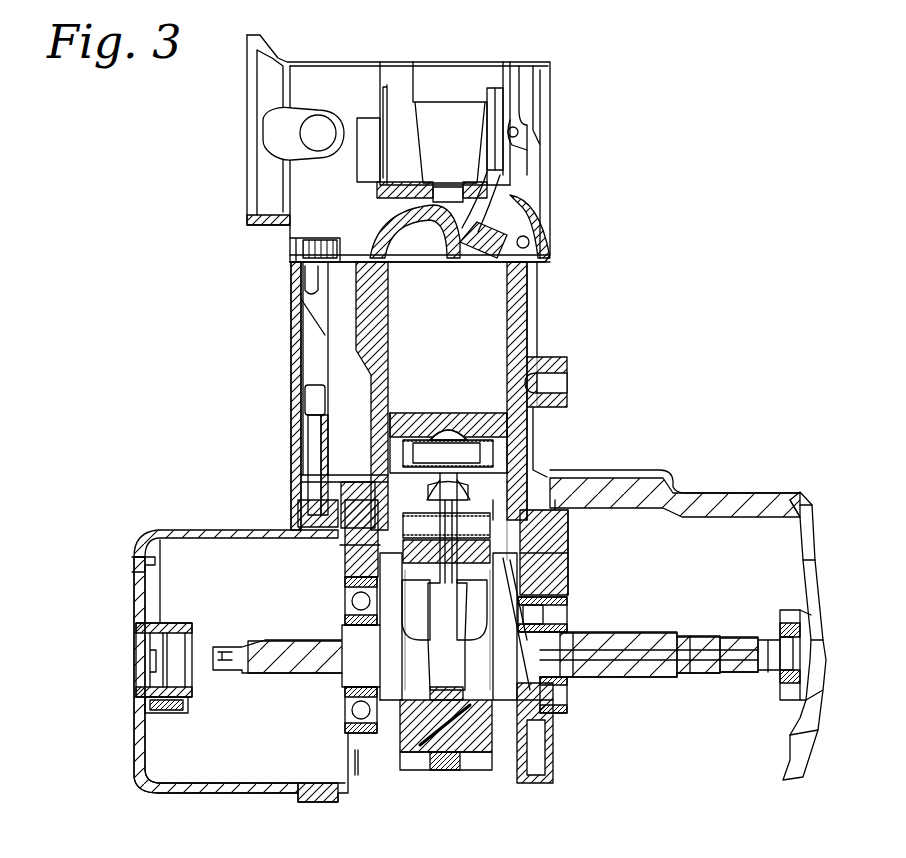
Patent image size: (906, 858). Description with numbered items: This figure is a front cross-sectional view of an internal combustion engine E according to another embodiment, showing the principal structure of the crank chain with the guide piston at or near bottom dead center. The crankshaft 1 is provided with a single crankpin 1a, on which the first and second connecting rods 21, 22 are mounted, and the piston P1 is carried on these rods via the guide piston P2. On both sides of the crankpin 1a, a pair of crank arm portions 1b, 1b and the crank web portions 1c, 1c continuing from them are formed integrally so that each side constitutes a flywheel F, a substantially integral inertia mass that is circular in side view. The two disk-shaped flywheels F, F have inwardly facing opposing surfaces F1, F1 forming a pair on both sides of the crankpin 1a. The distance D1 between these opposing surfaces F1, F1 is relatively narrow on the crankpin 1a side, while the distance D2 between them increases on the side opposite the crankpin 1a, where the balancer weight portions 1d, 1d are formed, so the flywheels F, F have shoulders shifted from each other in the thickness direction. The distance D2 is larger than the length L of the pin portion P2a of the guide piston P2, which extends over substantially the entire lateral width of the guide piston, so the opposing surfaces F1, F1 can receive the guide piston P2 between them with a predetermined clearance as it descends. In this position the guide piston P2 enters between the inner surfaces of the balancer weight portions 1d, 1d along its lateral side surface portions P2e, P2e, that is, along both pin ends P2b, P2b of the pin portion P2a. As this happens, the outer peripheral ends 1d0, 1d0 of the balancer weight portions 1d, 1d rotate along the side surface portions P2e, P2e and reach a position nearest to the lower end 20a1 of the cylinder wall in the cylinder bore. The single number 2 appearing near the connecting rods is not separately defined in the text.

The internal combustion engine E is at (207, 188).
The crankshaft 1 is at (502, 701).
The crankpin 1a is at (430, 733).
The crank arm portion 1b is at (398, 770).
The crank web portion 1c is at (547, 720).
The balancer weight portion 1d is at (548, 600).
The outer peripheral end of balancer weight portion 1d0 is at (350, 580).
The connecting rod 2 is at (418, 500).
The first connecting rod 21 is at (347, 617).
The second connecting rod 22 is at (392, 493).
The lower end of cylinder wall 20a1 is at (353, 558).
The piston P1 is at (468, 423).
The guide piston P2 is at (480, 520).
The pin portion P2a is at (560, 533).
The pin end P2b is at (482, 552).
The side surface portion P2e is at (355, 550).
The length of pin portion L is at (494, 508).
The opposing surface F1 is at (398, 597).
The flywheel F is at (395, 722).
The distance between opposing surfaces on crankpin side D1 is at (462, 779).
The distance between opposing surfaces on balancer side D2 is at (405, 615).